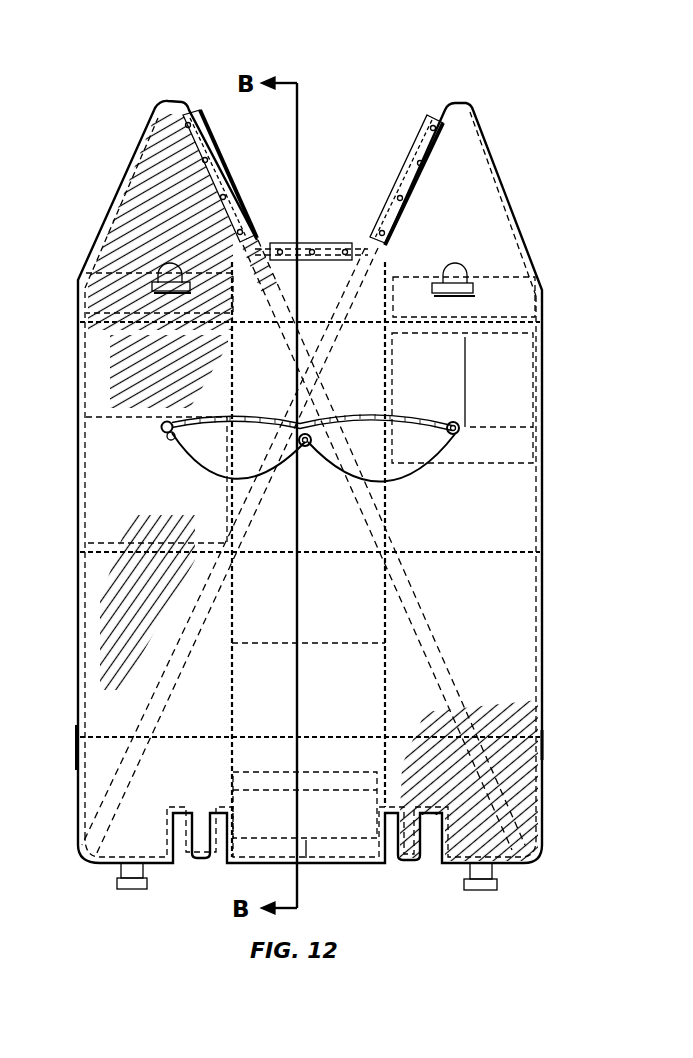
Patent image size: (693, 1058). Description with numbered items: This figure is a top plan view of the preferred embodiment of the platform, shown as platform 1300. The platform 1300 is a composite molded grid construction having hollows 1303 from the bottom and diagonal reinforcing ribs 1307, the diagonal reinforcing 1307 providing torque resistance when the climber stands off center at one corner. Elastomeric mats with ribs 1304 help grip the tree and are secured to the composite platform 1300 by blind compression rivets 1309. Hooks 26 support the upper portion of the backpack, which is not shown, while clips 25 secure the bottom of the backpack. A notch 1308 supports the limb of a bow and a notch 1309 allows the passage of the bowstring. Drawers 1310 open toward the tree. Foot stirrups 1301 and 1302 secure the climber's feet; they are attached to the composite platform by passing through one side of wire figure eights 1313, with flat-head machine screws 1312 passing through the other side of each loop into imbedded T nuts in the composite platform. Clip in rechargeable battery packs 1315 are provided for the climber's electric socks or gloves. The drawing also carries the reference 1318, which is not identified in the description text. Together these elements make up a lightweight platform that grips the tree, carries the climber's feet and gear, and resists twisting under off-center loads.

The platform 1300 is at (584, 513).
The foot stirrup 1301 is at (447, 430).
The foot stirrup 1302 is at (440, 466).
The hollows 1303 is at (490, 507).
The elastomeric mats with ribs 1304 is at (442, 121).
The diagonal reinforcing ribs 1307 is at (357, 807).
The notch 1308 is at (518, 820).
The blind compression rivets / notch 1309 is at (432, 120).
The drawers 1310 is at (538, 343).
The flat-head machine screws 1312 is at (452, 443).
The wire figure eights 1313 is at (425, 470).
The clip in rechargeable battery packs 1315 is at (485, 285).
The side edge 1318 is at (543, 742).
The clips 25 is at (492, 878).
The hooks 26 is at (463, 275).